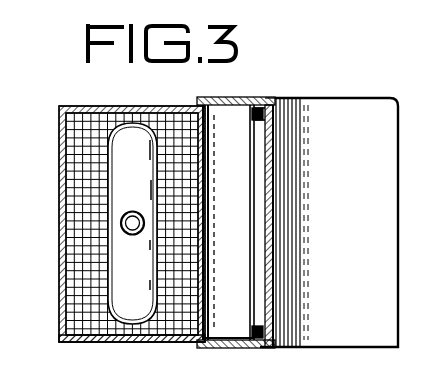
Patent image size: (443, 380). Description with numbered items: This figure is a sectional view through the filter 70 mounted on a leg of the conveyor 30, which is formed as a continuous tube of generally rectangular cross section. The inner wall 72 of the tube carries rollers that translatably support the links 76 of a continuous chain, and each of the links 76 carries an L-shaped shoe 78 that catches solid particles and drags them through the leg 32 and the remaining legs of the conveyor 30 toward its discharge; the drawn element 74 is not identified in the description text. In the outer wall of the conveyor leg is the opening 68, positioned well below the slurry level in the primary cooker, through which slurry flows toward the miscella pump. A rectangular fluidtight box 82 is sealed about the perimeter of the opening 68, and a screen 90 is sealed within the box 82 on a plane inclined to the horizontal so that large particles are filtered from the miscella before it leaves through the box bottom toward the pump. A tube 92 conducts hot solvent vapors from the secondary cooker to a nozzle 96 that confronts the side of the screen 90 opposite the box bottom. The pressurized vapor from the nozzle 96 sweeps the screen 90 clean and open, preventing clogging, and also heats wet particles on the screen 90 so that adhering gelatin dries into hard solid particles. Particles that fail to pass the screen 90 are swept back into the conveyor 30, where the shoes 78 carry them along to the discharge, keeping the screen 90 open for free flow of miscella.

The conveyor 30 is at (280, 201).
The leg 32 is at (365, 117).
The opening 68 is at (205, 133).
The filter 70 is at (57, 167).
The inner wall 72 is at (272, 259).
The strip 74 is at (292, 100).
The links 76 is at (258, 110).
The L-shaped shoe 78 is at (232, 343).
The fluidtight box 82 is at (62, 281).
The screen 90 is at (78, 203).
The tube 92 is at (133, 236).
The nozzle 96 is at (130, 131).